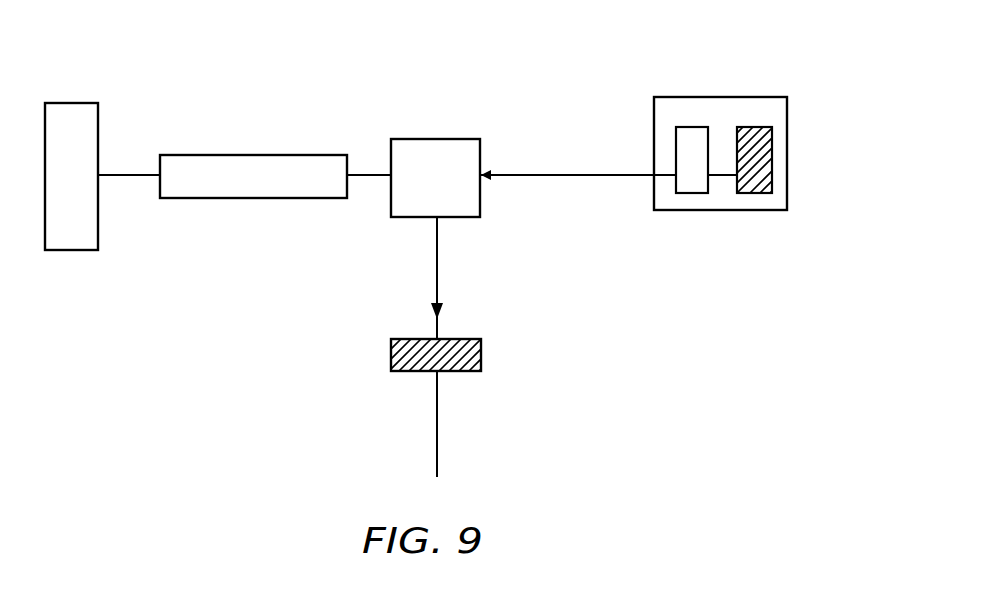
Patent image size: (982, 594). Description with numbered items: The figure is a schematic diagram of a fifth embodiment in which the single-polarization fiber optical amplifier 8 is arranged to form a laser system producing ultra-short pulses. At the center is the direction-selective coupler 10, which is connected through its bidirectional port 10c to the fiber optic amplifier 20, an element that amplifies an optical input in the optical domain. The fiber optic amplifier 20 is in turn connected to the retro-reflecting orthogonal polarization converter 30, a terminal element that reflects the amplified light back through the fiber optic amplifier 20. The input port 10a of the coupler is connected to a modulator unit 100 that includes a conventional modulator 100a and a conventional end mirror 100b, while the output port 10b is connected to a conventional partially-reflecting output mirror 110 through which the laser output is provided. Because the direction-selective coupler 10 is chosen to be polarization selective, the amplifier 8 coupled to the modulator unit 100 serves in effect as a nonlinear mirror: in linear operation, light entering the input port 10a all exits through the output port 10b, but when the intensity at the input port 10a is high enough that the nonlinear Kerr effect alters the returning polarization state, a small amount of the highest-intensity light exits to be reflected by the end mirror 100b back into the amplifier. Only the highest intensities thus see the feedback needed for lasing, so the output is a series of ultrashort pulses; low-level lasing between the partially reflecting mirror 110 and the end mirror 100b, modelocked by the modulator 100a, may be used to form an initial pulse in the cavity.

The single-polarization fiber optical amplifier 8 is at (232, 240).
The direction-selective coupler 10 is at (454, 189).
The input port 10a is at (481, 173).
The output port 10b is at (443, 218).
The bidirectional port 10c is at (388, 178).
The fiber optic amplifier 20 is at (276, 187).
The retro-reflecting orthogonal polarization converter 30 is at (88, 186).
The modulator unit 100 is at (683, 215).
The modulator 100a is at (690, 127).
The end mirror 100b is at (758, 127).
The partially-reflecting output mirror 110 is at (465, 371).